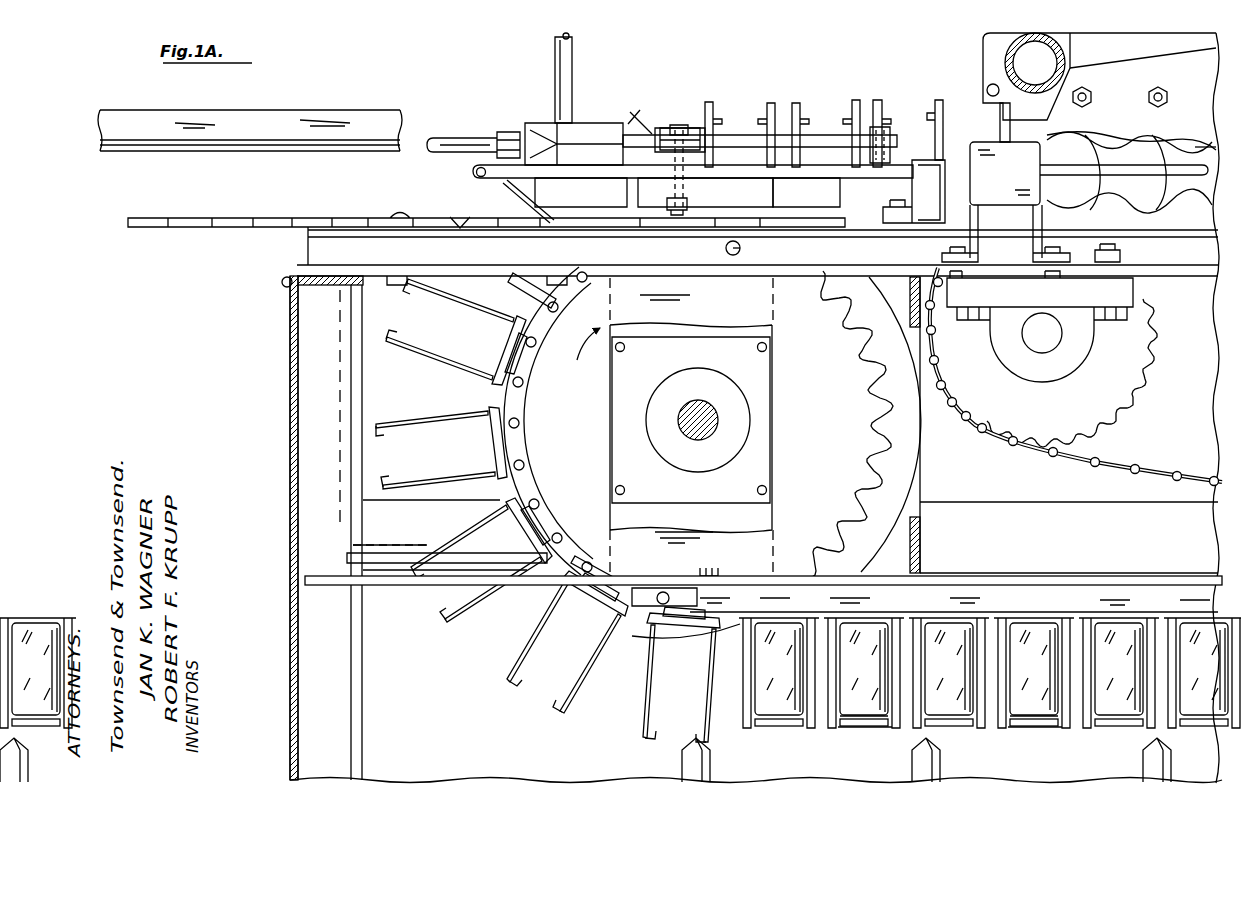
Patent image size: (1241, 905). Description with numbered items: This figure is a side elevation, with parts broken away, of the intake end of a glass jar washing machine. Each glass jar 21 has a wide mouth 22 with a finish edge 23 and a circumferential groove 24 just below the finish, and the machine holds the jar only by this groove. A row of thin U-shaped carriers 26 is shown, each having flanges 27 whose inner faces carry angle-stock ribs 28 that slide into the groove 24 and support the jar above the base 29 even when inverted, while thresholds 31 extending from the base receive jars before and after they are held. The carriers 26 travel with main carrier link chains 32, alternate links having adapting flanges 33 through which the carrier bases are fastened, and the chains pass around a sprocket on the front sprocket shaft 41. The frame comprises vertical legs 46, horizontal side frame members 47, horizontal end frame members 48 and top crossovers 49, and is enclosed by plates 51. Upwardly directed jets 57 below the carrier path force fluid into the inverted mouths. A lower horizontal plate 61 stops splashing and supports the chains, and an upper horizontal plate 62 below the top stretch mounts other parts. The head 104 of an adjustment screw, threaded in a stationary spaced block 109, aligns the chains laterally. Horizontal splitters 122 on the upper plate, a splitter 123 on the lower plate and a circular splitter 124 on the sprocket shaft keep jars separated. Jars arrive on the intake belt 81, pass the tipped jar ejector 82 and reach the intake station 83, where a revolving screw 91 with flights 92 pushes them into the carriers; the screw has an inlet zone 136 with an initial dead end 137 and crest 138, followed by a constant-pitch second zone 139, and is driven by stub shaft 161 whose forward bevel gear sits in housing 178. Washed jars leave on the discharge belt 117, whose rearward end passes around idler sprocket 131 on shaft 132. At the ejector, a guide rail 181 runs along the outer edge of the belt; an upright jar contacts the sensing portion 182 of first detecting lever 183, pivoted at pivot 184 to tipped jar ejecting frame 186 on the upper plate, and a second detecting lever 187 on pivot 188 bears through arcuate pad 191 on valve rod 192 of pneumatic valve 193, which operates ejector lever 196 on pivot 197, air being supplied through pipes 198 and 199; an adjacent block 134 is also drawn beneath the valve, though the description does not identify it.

The glass jar 21 is at (785, 676).
The mouth 22 is at (876, 728).
The finish edge 23 is at (1013, 729).
The circumferential groove 24 is at (866, 717).
The carrier 26 is at (443, 484).
The flange 27 is at (492, 313).
The rib 28 is at (405, 295).
The base 29 is at (596, 615).
The threshold 31 is at (516, 540).
The main carrier link chain 32 is at (583, 554).
The adapting flange 33 is at (522, 352).
The front sprocket shaft 41 is at (705, 413).
The vertical leg 46 is at (363, 669).
The horizontal side frame member 47 is at (1080, 538).
The horizontal end frame member 48 is at (285, 300).
The top crossover 49 is at (1004, 48).
The plate 51 is at (298, 648).
The jet 57 is at (682, 762).
The lower horizontal plate 61 is at (1195, 576).
The upper horizontal plate 62 is at (473, 270).
The intake belt 81 is at (238, 217).
The tipped jar ejector 82 is at (658, 99).
The intake station 83 is at (1142, 143).
The revolving screw 91 is at (1165, 182).
The flight 92 is at (1129, 205).
The head 104 is at (726, 251).
The stationary spaced block 109 is at (840, 259).
The discharge belt 117 is at (1151, 481).
The horizontal splitter 122 is at (835, 222).
The splitter 123 is at (1072, 628).
The circular splitter 124 is at (527, 480).
The idler sprocket 131 is at (1133, 377).
The shaft 132 is at (1046, 322).
The block 134 is at (575, 200).
The inlet zone 136 is at (1063, 132).
The initial dead end 137 is at (1017, 131).
The crest 138 is at (1133, 143).
The second zone 139 is at (1186, 150).
The stub shaft 161 is at (1090, 178).
The housing 178 is at (1021, 183).
The guide rail 181 is at (346, 116).
The sensing portion 182 is at (667, 130).
The first detecting lever 183 is at (807, 140).
The pivot 184 is at (890, 143).
The tipped jar ejecting frame 186 is at (912, 189).
The second detecting lever 187 is at (769, 118).
The pivot 188 is at (715, 133).
The arcuate pad 191 is at (685, 124).
The valve rod 192 is at (650, 120).
The pneumatic valve 193 is at (600, 157).
The ejector lever 196 is at (748, 197).
The pivot 197 is at (690, 211).
The pipe 198 is at (555, 57).
The pipe 199 is at (466, 137).